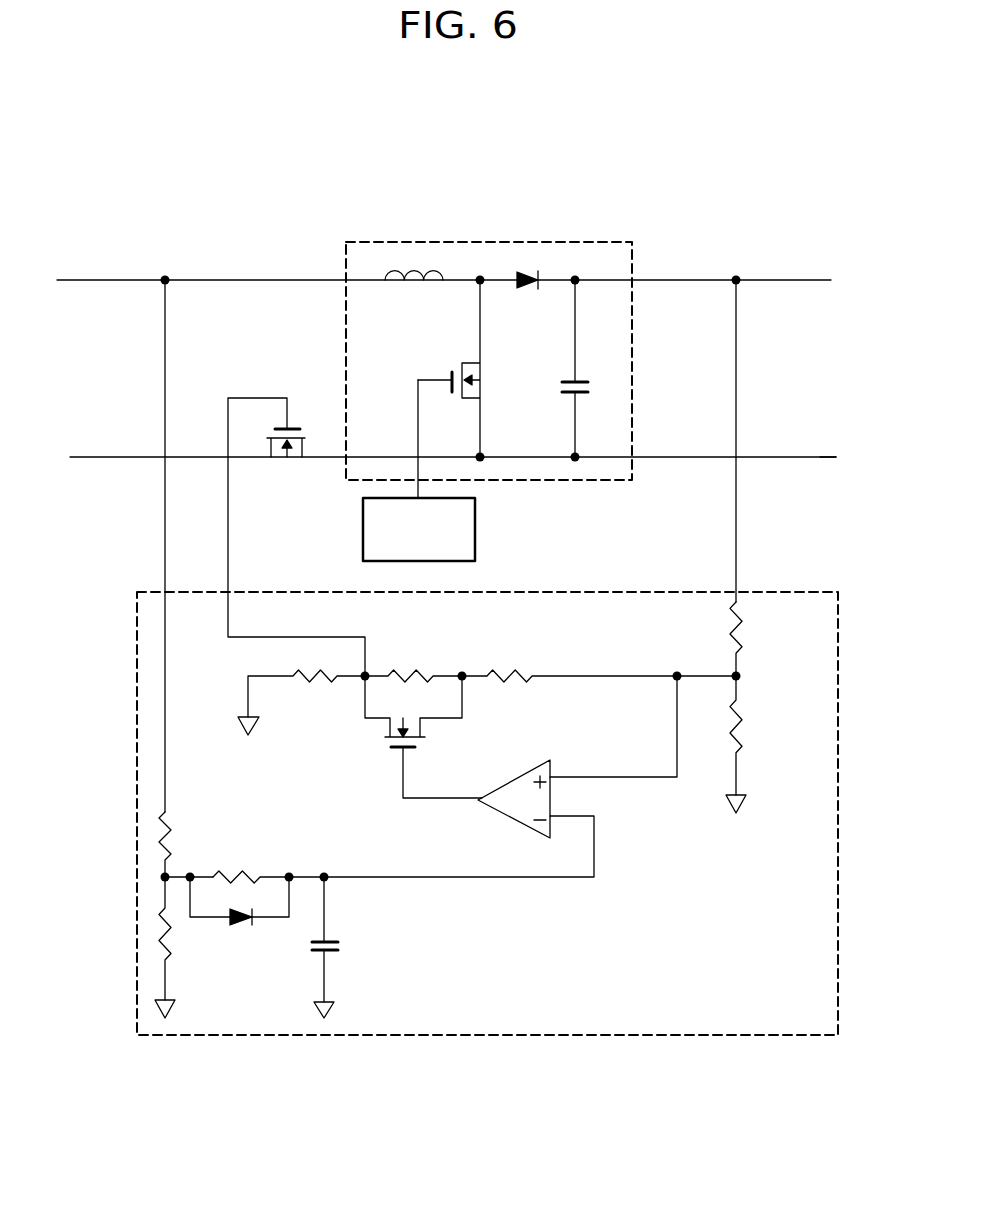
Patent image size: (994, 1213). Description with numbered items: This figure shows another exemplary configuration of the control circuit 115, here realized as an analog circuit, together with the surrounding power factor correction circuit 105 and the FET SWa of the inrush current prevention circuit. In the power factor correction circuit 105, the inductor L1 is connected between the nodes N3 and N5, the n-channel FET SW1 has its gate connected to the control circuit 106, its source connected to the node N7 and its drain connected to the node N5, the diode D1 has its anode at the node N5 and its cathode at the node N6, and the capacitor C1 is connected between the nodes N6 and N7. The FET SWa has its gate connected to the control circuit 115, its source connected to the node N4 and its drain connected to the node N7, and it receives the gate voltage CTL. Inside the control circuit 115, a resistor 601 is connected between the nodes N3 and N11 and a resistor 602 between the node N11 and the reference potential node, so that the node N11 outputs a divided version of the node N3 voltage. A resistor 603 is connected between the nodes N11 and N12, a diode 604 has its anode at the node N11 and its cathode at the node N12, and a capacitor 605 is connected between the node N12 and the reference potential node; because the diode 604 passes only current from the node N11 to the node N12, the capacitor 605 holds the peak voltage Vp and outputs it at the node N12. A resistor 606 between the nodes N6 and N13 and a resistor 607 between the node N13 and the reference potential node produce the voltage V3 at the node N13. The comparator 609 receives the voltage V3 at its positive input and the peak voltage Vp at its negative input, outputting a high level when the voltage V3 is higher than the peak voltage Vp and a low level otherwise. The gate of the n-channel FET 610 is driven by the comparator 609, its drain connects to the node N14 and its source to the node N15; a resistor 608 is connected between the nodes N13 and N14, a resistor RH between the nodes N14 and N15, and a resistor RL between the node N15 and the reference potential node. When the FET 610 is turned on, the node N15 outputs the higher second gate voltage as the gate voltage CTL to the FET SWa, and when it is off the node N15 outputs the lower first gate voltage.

The power factor correction circuit 105 is at (562, 242).
The control circuit 115 is at (137, 716).
The node N3 is at (97, 280).
The node N4 is at (118, 457).
The node N5 is at (480, 280).
The node N6 is at (797, 280).
The node N7 is at (797, 457).
The inductor L1 is at (418, 293).
The diode D1 is at (526, 292).
The capacitor C1 is at (590, 387).
The n-channel field effect transistor SW1 is at (485, 373).
The n-channel field effect transistor SWa is at (290, 445).
The gate voltage CTL is at (258, 398).
The control circuit 106 is at (475, 530).
The resistor RL is at (312, 670).
The resistor RH is at (405, 665).
The node N13 is at (741, 676).
The node N14 is at (462, 665).
The node N15 is at (360, 684).
The resistor 608 is at (515, 665).
The n-channel FET 610 is at (388, 750).
The comparator 609 is at (505, 783).
The voltage V3 is at (590, 777).
The peak voltage Vp is at (594, 843).
The resistor 606 is at (745, 625).
The resistor 607 is at (748, 737).
The resistor 601 is at (170, 822).
The resistor 602 is at (160, 932).
The resistor 603 is at (245, 870).
The diode 604 is at (238, 928).
The capacitor 605 is at (345, 946).
The node N11 is at (160, 877).
The node N12 is at (326, 870).